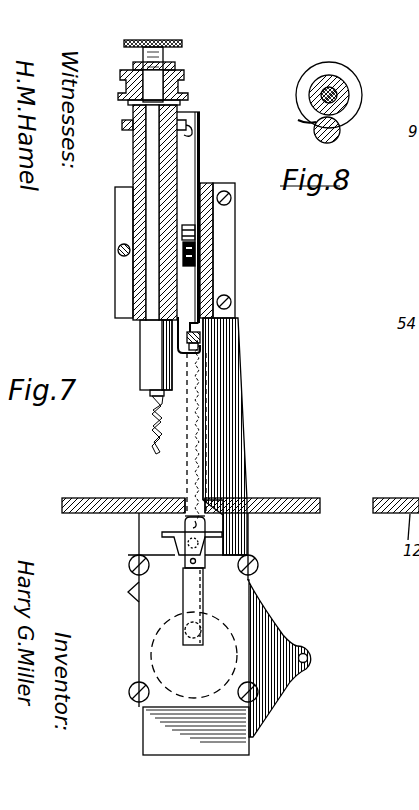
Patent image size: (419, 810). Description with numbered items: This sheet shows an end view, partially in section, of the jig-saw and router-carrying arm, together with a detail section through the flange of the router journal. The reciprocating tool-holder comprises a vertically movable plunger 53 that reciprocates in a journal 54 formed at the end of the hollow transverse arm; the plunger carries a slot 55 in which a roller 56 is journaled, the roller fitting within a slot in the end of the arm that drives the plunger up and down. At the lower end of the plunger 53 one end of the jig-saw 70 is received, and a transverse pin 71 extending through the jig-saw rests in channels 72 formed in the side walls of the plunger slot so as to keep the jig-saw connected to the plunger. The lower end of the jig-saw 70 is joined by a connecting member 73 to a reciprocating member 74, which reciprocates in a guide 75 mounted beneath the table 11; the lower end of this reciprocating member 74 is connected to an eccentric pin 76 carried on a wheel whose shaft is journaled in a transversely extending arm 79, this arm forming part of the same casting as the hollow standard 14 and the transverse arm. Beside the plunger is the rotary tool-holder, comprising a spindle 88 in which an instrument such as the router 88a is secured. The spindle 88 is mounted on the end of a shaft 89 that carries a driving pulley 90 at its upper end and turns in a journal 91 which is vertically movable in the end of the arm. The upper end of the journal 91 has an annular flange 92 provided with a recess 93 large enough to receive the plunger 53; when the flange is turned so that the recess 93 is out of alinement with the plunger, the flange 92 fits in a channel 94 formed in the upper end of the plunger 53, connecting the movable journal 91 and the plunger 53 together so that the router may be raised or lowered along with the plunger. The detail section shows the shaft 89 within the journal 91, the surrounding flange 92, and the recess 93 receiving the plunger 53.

In FIG. 7, the driving pulley 90 is at (176, 84).
In FIG. 7, the journal 91 is at (134, 150).
In FIG. 8, the journal 91 is at (339, 82).
In FIG. 7, the shaft 89 is at (152, 155).
In FIG. 8, the shaft 89 is at (325, 92).
In FIG. 7, the annular flange 92 is at (125, 125).
In FIG. 8, the annular flange 92 is at (356, 91).
In FIG. 7, the channel 94 is at (190, 135).
In FIG. 7, the plunger 53 is at (190, 172).
In FIG. 8, the plunger 53 is at (340, 136).
In FIG. 7, the journal 54 is at (206, 188).
In FIG. 7, the slot 55 is at (195, 229).
In FIG. 7, the roller 56 is at (188, 247).
In FIG. 7, the channels 72 is at (197, 336).
In FIG. 7, the transverse pin 71 is at (199, 347).
In FIG. 7, the spindle 88 is at (140, 352).
In FIG. 7, the router 88a is at (152, 440).
In FIG. 7, the hollow standard 14 is at (226, 402).
In FIG. 7, the jig-saw 70 is at (200, 448).
In FIG. 7, the table 11 is at (82, 516).
In FIG. 7, the connecting member 73 is at (203, 525).
In FIG. 7, the reciprocating member 74 is at (197, 592).
In FIG. 7, the guide 75 is at (207, 598).
In FIG. 7, the eccentric pin 76 is at (200, 630).
In FIG. 7, the transversely extending arm 79 is at (240, 737).
In FIG. 8, the recess 93 is at (300, 123).